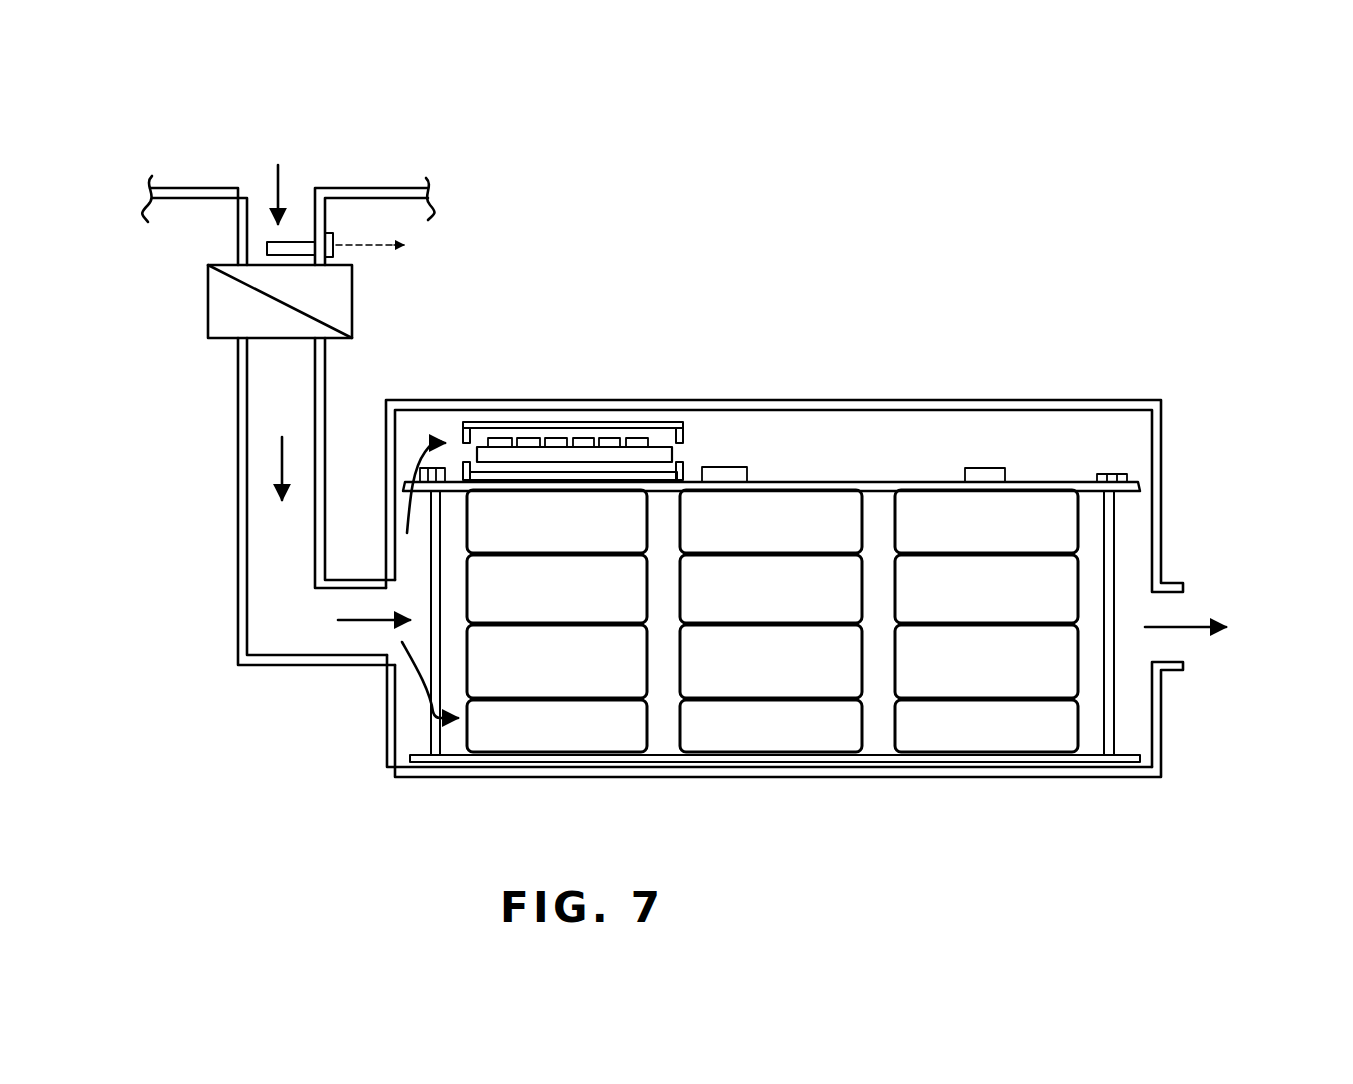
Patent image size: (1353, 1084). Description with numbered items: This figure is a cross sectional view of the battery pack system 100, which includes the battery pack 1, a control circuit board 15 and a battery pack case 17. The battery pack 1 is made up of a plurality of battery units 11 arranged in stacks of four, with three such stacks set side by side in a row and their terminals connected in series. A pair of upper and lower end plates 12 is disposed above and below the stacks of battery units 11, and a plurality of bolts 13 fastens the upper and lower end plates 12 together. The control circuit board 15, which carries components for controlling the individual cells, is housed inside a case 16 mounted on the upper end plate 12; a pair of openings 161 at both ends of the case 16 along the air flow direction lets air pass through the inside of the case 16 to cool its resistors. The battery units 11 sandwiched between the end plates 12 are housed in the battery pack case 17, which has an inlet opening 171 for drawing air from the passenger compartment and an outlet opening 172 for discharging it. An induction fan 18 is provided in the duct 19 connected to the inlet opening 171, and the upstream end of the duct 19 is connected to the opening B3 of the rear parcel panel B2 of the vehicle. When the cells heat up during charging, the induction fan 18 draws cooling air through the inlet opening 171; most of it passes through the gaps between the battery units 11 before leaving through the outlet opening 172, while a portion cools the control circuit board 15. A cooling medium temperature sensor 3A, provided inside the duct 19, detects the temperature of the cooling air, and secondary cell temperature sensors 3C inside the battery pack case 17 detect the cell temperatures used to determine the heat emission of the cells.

The battery pack system 100 is at (1050, 278).
The battery pack 1 is at (1138, 574).
The battery units 11 is at (622, 520).
The upper and lower end plates 12 is at (883, 480).
The bolts 13 is at (1117, 527).
The control circuit board 15 is at (568, 452).
The case 16 is at (633, 422).
The openings 161 is at (470, 450).
The battery pack case 17 is at (983, 400).
The inlet opening 171 is at (394, 658).
The outlet opening 172 is at (1173, 662).
The induction fan 18 is at (335, 297).
The duct 19 is at (237, 450).
The cooling medium temperature sensor 3A is at (270, 246).
The secondary cell temperature sensors 3C is at (718, 467).
The rear parcel panel B2 is at (198, 188).
The opening B3 is at (305, 202).